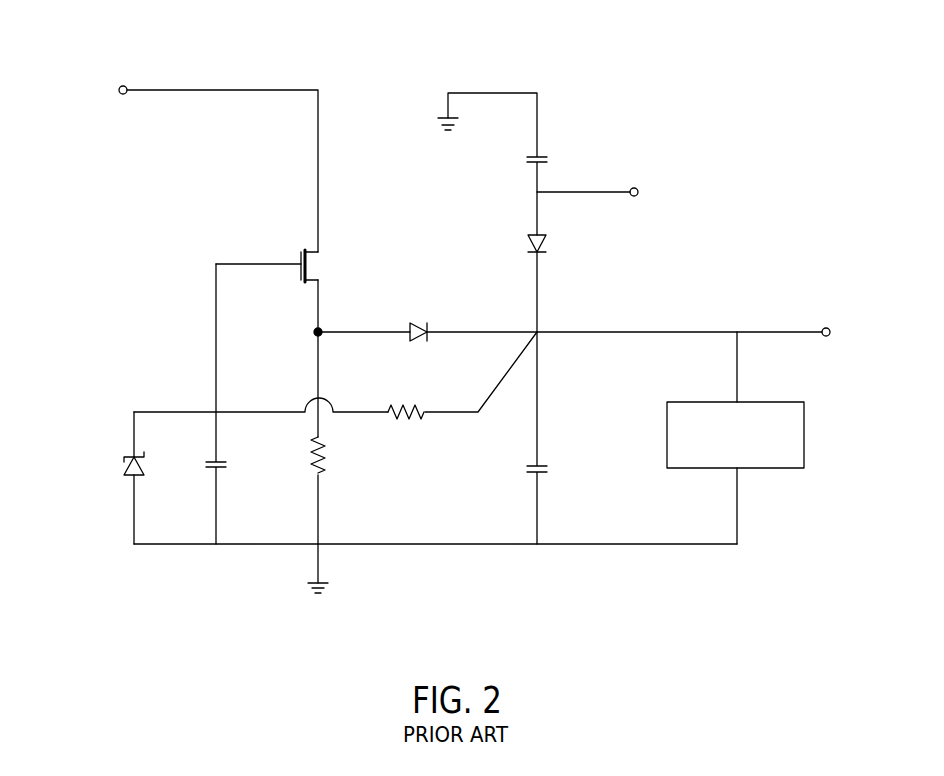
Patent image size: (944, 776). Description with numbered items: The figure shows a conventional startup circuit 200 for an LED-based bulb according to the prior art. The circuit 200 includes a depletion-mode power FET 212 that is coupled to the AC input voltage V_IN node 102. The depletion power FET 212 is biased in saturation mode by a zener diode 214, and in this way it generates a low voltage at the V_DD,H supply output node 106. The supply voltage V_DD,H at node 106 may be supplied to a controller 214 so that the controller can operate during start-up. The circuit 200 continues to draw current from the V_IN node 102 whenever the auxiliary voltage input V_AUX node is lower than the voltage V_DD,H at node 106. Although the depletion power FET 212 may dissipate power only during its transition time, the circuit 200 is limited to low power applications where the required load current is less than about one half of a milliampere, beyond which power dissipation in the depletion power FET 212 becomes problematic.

The AC input voltage V_IN node 102 is at (122, 85).
The V_DD,H supply output node 106 is at (827, 327).
The conventional startup circuit 200 is at (98, 170).
The depletion-mode power FET 212 is at (311, 250).
The zener diode 214 is at (805, 437).